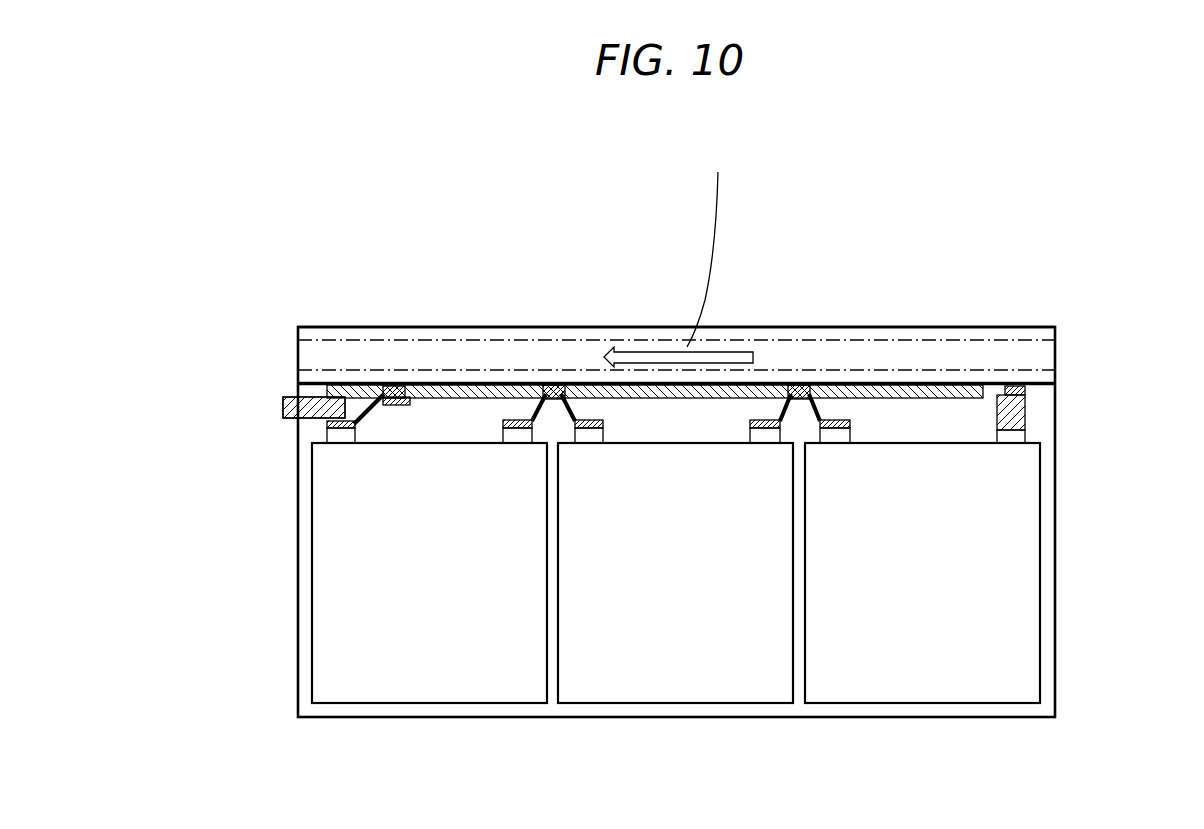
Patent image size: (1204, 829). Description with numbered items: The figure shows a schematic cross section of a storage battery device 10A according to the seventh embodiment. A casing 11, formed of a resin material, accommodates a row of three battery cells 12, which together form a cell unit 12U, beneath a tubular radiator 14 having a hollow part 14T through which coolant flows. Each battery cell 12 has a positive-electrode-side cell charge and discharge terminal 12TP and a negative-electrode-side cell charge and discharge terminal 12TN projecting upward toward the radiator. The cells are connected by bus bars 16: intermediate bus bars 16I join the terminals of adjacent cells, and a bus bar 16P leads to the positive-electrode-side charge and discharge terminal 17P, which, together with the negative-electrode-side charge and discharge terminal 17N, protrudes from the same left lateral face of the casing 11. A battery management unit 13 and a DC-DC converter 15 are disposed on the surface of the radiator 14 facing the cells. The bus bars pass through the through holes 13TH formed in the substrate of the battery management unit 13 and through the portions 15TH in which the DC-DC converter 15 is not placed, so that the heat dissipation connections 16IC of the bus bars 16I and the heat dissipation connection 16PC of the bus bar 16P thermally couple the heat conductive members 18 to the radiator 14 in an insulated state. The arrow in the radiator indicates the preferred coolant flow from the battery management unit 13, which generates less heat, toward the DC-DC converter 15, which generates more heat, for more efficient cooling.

The storage battery device 10A is at (932, 164).
The casing 11 is at (1057, 585).
The battery cell 12 is at (433, 678).
The cell unit 12U is at (798, 760).
The positive-electrode-side cell charge and discharge terminal 12TP is at (318, 438).
The negative-electrode-side cell charge and discharge terminal 12TN is at (503, 432).
The battery management unit 13 is at (770, 383).
The through hole 13TH is at (783, 383).
The radiator 14 is at (657, 327).
The hollow part 14T is at (953, 357).
The DC-DC converter 15 is at (343, 383).
The portion in which the DC-DC converter is not placed 15TH is at (362, 383).
The bus bar 16 is at (655, 391).
The bus bar 16P is at (413, 398).
The heat dissipation connection 16PC is at (399, 388).
The bus bar 16I is at (572, 405).
The heat dissipation connection 16IC is at (571, 390).
The positive-electrode-side charge and discharge terminal 17P is at (274, 393).
The negative-electrode-side charge and discharge terminal 17N is at (314, 407).
The heat conductive member 18 is at (379, 383).